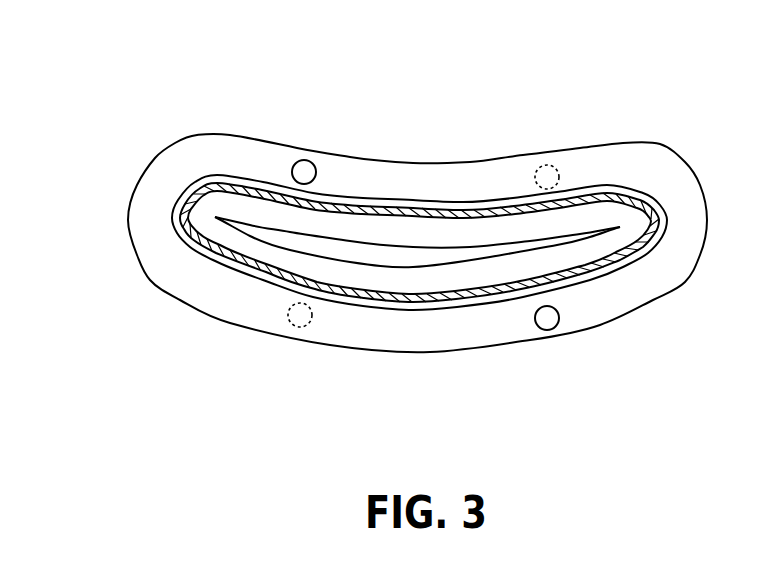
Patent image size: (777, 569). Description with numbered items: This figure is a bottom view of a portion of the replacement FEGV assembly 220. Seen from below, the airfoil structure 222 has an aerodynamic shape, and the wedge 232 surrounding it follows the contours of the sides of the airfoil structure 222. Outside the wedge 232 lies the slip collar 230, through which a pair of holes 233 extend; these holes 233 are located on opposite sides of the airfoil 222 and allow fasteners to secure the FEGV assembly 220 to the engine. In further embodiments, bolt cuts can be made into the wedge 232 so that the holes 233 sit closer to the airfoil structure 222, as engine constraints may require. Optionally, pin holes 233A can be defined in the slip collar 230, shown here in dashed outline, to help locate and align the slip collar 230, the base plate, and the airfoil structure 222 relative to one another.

The FEGV assembly 220 is at (174, 88).
The airfoil structure 222 is at (413, 255).
The slip collar 230 is at (658, 306).
The wedge 232 is at (204, 213).
The holes 233 is at (304, 172).
The pin holes 233A is at (548, 177).